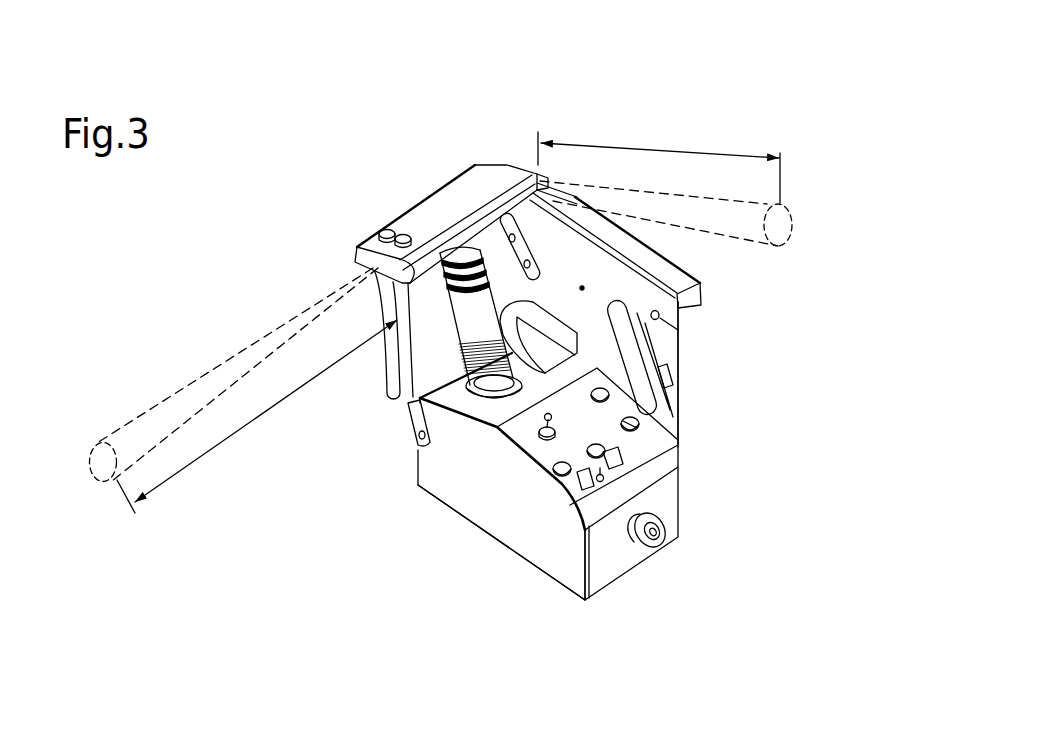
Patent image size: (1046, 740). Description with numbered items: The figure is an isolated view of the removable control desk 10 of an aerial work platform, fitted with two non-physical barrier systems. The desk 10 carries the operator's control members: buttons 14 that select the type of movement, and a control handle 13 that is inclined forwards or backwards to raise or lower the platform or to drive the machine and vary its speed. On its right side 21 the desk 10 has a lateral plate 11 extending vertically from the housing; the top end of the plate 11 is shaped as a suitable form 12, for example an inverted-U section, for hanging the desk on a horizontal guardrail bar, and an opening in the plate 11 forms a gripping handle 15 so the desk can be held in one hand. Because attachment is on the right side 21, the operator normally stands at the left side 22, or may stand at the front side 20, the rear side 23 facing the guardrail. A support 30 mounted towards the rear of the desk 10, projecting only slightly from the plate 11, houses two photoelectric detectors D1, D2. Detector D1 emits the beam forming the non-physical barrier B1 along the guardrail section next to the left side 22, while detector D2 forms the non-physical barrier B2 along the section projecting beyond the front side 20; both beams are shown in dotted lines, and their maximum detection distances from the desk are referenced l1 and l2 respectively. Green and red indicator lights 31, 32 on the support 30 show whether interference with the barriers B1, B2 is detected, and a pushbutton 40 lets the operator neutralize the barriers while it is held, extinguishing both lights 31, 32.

The control desk 10 is at (472, 118).
The lateral plate 11 is at (580, 278).
The suitable form (inverted U cross section) 12 is at (703, 322).
The control handle 13 is at (467, 392).
The buttons 14 is at (556, 453).
The gripping handle 15 is at (641, 390).
The front side 20 is at (653, 590).
The right side 21 is at (702, 397).
The left side 22 is at (527, 530).
The rear side 23 is at (380, 358).
The support 30 is at (450, 198).
The green indicator light 31 is at (387, 228).
The red indicator light 32 is at (403, 233).
The pushbutton 40 is at (645, 313).
The photoelectric detector D1 is at (358, 253).
The photoelectric detector D2 is at (548, 171).
The non-physical barrier B1 is at (148, 430).
The non-physical barrier B2 is at (733, 216).
The maximum detection distance l1 is at (257, 416).
The maximum detection distance l2 is at (659, 164).